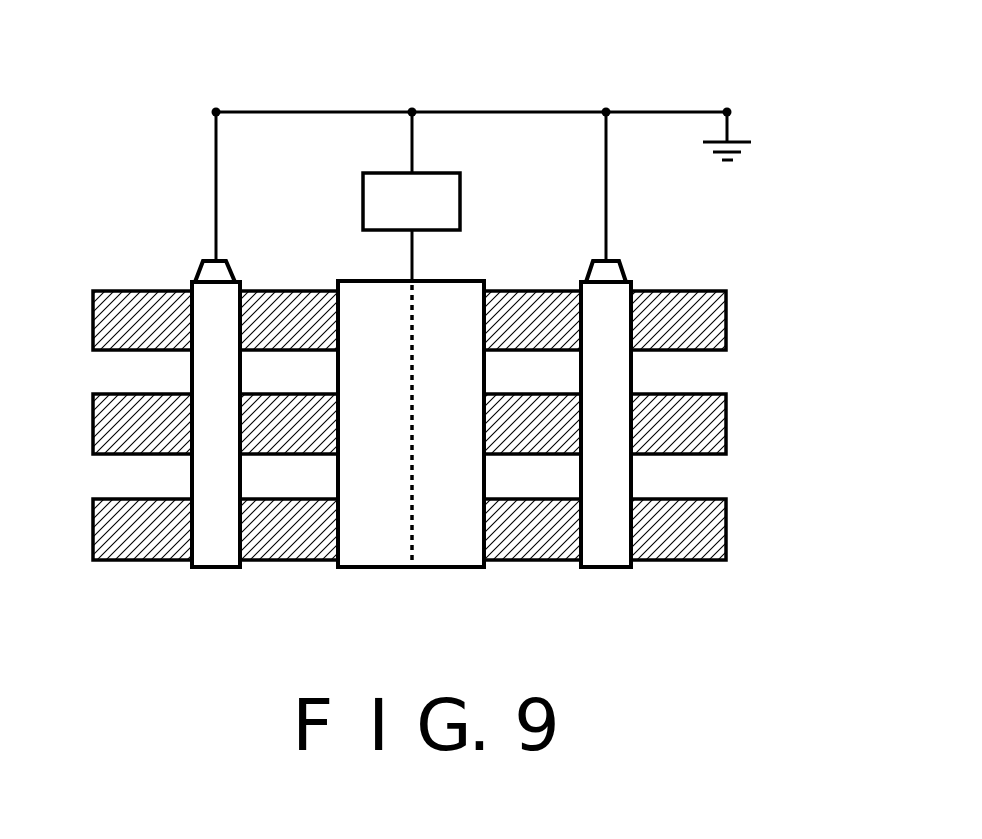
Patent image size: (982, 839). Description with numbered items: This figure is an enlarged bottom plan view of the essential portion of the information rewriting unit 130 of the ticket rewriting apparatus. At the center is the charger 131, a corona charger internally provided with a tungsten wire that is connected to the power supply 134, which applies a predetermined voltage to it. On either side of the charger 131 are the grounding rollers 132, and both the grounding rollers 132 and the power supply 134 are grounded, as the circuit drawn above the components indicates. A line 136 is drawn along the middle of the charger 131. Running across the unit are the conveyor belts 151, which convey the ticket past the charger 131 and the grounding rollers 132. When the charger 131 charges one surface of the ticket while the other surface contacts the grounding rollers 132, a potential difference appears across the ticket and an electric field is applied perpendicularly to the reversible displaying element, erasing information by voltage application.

The information rewriting unit 130 is at (449, 98).
The charger 131 is at (463, 556).
The grounding rollers 132 is at (218, 560).
The power supply 134 is at (462, 185).
The center line / boundary 136 is at (410, 510).
The conveyor belts 151 is at (712, 317).